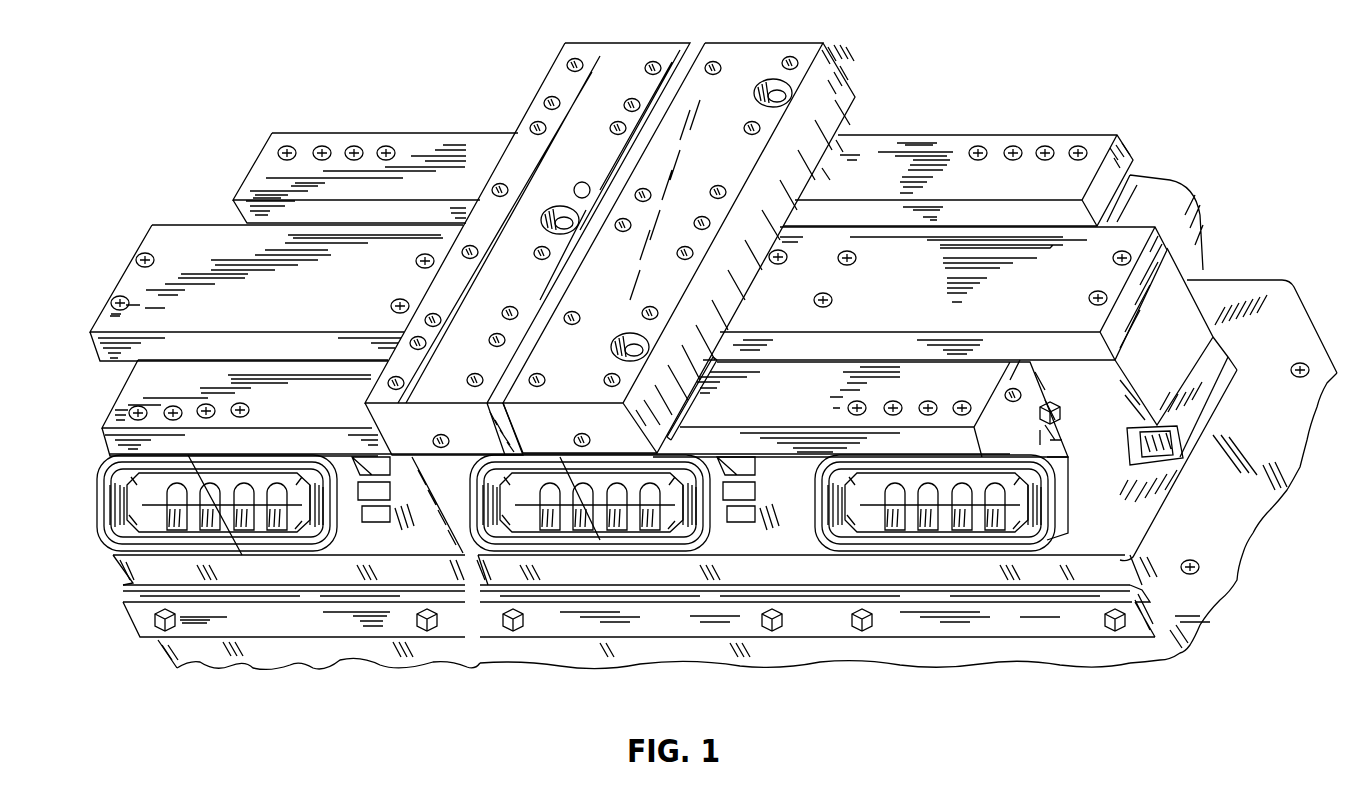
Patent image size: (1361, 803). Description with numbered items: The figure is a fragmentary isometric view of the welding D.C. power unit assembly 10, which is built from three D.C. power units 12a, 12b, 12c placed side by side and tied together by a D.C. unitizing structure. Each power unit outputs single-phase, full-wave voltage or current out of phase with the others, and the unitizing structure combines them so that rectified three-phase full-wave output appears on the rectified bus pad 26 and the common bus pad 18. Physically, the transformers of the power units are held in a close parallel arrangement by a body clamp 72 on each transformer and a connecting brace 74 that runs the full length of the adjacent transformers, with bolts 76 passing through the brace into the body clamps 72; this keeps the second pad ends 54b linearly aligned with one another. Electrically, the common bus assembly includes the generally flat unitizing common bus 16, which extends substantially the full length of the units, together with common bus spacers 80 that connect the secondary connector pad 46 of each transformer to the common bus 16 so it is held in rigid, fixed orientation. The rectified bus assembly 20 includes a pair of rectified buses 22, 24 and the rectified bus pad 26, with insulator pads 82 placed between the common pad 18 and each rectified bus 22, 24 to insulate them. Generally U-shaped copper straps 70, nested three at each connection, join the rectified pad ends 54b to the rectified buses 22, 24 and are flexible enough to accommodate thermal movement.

The welding D.C. power unit assembly 10 is at (1078, 62).
The D.C. power unit 12a is at (213, 670).
The D.C. power unit 12b is at (793, 663).
The D.C. power unit 12c is at (1185, 660).
The unitizing common bus 16 is at (1107, 245).
The common bus pad 18 is at (745, 60).
The rectified bus assembly 20 is at (553, 74).
The rectified bus 22 is at (822, 416).
The rectified bus 24 is at (942, 147).
The rectified bus pad 26 is at (630, 58).
The secondary connector pad 46 is at (1213, 350).
The second pad end 54b is at (170, 505).
The copper strap 70 is at (1027, 556).
The body clamp 72 is at (1312, 330).
The connecting brace 74 is at (912, 625).
The bolt 76 is at (858, 625).
The common bus spacer 80 is at (1177, 312).
The insulator pad 82 is at (838, 147).